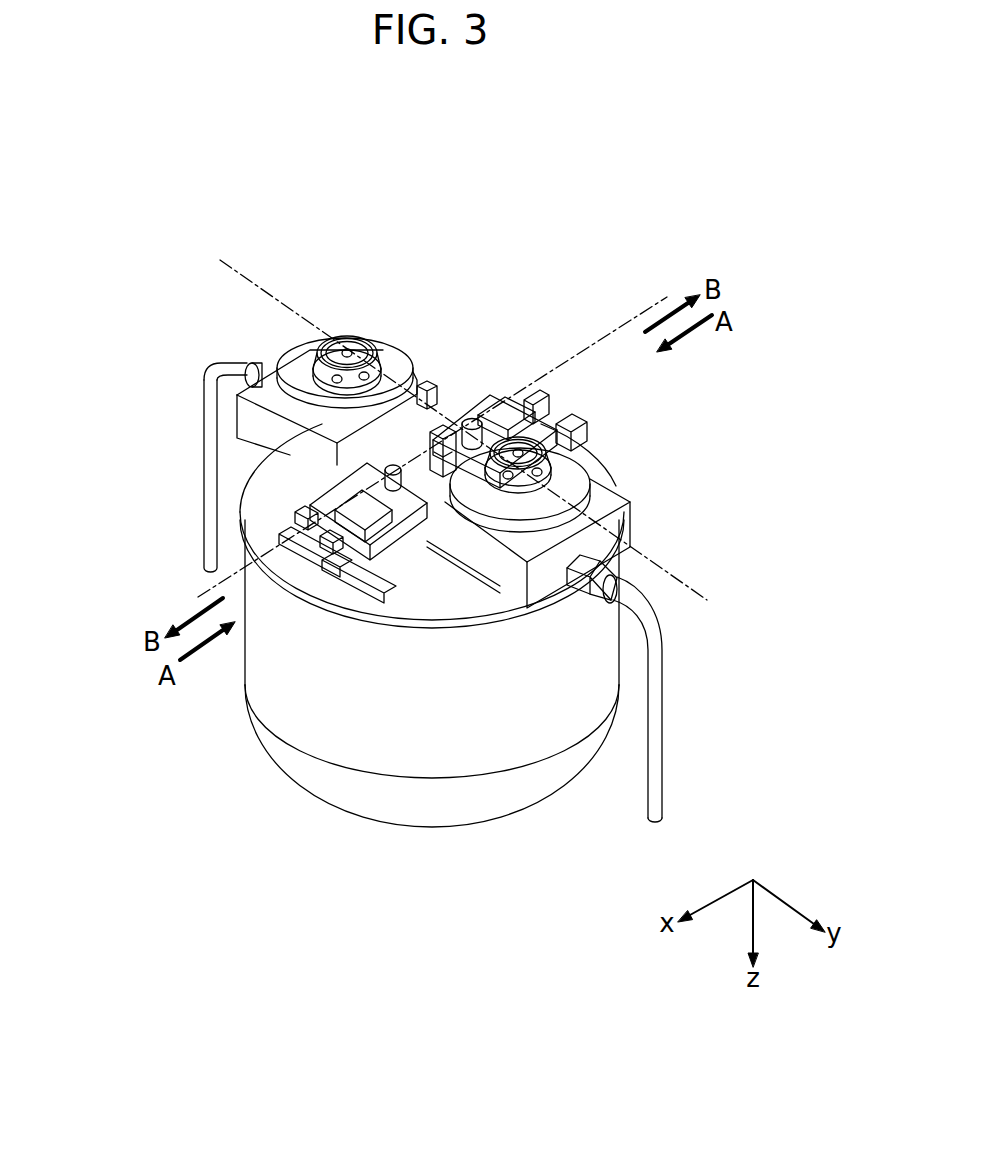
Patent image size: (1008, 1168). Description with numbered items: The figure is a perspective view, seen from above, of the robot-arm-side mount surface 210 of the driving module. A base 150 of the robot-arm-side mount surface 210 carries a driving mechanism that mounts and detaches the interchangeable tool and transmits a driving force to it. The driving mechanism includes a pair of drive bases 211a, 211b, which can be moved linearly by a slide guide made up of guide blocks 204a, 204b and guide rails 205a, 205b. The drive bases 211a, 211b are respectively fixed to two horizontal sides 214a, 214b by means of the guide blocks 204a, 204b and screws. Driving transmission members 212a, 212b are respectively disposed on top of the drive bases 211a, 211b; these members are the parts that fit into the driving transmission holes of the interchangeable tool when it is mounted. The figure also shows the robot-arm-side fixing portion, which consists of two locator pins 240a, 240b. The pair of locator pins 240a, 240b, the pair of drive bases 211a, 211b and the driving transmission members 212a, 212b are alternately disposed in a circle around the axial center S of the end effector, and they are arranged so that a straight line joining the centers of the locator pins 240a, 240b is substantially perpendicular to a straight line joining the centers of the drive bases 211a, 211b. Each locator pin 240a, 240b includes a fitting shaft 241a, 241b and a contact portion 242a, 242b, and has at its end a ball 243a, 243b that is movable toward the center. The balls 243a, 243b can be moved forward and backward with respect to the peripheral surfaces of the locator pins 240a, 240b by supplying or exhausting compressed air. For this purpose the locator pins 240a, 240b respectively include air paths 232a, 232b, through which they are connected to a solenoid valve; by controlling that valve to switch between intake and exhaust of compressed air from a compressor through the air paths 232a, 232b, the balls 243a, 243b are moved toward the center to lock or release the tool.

The base 150 is at (435, 588).
The robot-arm-side mount surface 210 is at (397, 326).
The guide block 204a is at (318, 523).
The guide block 204b is at (428, 384).
The guide rail 205a is at (338, 566).
The guide rail 205b is at (578, 424).
The drive base 211a is at (362, 517).
The drive base 211b is at (502, 418).
The driving transmission member 212a is at (385, 476).
The driving transmission member 212b is at (472, 420).
The horizontal side 214a is at (328, 541).
The horizontal side 214b is at (443, 437).
The air path 232a is at (657, 800).
The air path 232b is at (207, 382).
The locator pin 240a is at (520, 448).
The locator pin 240b is at (342, 350).
The fitting shaft 241a is at (630, 547).
The fitting shaft 241b is at (300, 386).
The contact portion 242a is at (583, 473).
The contact portion 242b is at (300, 372).
The ball 243a is at (535, 492).
The ball 243b is at (322, 372).
The axial center S is at (438, 535).